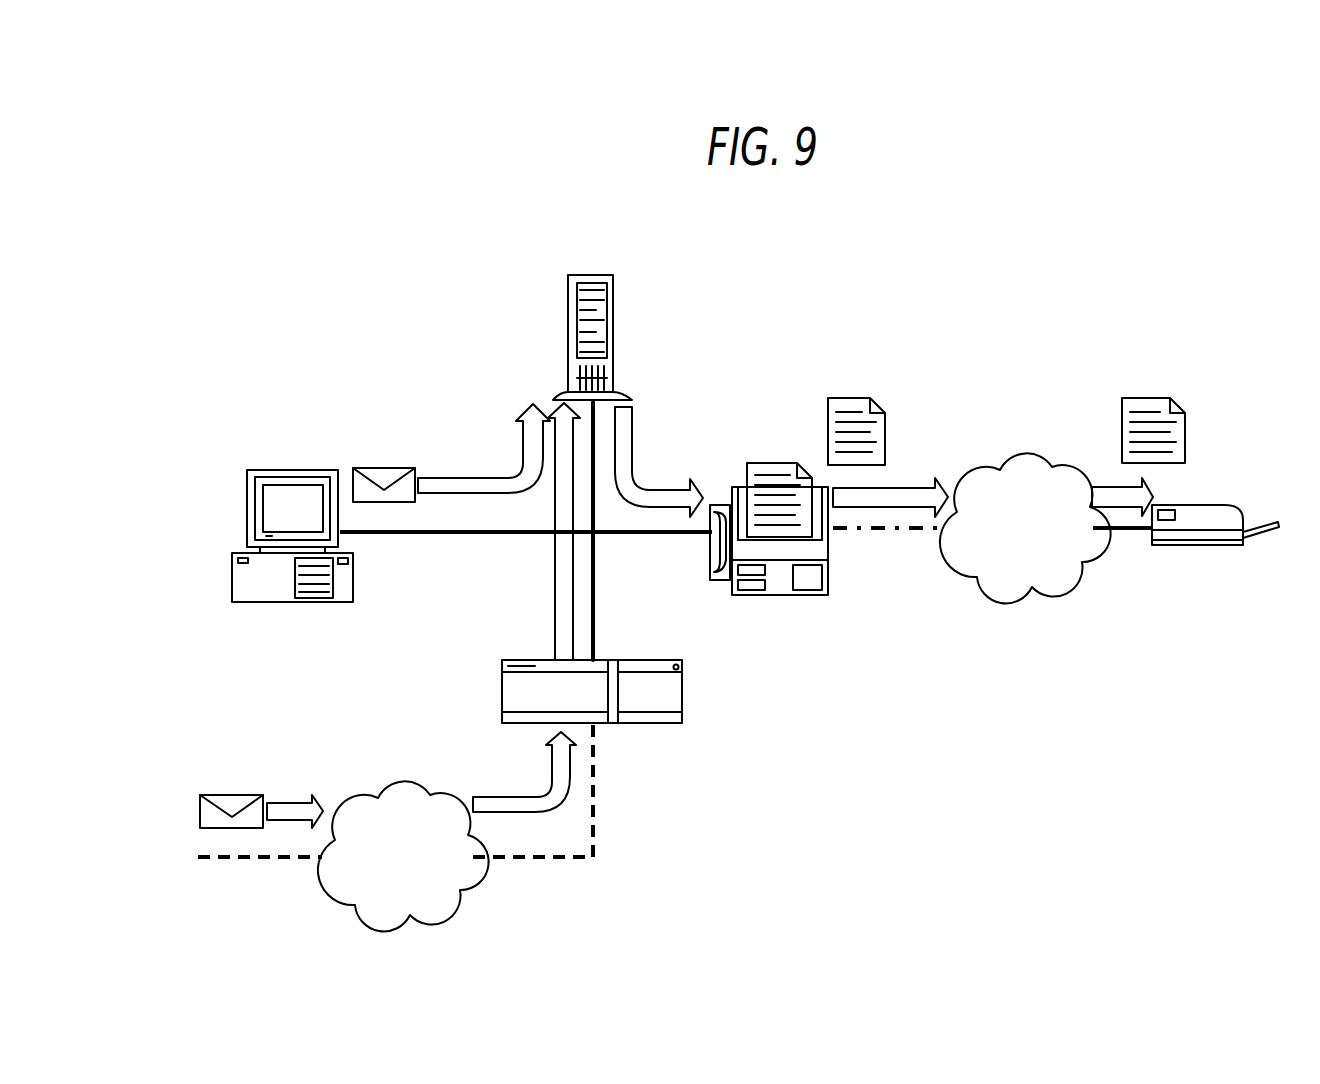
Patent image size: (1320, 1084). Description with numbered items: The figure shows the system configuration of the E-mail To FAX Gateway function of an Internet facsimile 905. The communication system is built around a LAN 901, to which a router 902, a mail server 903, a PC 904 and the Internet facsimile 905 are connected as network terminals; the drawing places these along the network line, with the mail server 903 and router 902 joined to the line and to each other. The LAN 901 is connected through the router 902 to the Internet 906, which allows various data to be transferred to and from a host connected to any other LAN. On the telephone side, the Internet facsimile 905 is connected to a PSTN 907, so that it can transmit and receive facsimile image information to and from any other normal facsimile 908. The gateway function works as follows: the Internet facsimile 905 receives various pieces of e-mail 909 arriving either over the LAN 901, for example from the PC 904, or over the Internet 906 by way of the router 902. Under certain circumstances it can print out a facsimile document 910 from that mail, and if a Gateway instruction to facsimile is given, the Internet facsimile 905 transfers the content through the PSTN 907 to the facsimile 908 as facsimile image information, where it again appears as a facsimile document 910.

The LAN 901 is at (470, 533).
The router 902 is at (650, 724).
The mail server 903 is at (575, 275).
The PC 904 is at (250, 470).
The Internet facsimile 905 is at (765, 596).
The Internet 906 is at (420, 793).
The PSTN 907 is at (995, 462).
The facsimile 908 is at (1173, 548).
The e-mail 909 is at (398, 468).
The facsimile document 910 is at (840, 398).